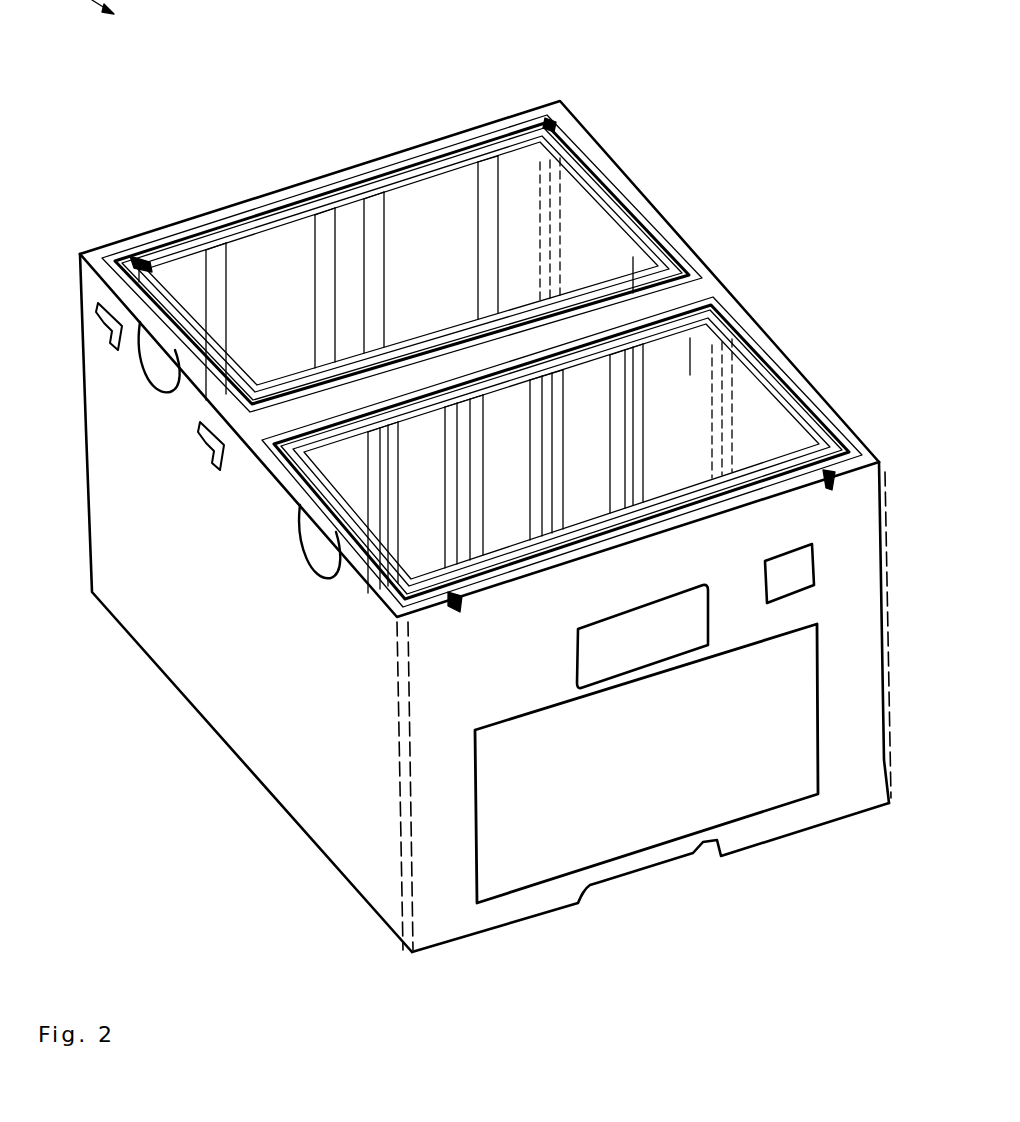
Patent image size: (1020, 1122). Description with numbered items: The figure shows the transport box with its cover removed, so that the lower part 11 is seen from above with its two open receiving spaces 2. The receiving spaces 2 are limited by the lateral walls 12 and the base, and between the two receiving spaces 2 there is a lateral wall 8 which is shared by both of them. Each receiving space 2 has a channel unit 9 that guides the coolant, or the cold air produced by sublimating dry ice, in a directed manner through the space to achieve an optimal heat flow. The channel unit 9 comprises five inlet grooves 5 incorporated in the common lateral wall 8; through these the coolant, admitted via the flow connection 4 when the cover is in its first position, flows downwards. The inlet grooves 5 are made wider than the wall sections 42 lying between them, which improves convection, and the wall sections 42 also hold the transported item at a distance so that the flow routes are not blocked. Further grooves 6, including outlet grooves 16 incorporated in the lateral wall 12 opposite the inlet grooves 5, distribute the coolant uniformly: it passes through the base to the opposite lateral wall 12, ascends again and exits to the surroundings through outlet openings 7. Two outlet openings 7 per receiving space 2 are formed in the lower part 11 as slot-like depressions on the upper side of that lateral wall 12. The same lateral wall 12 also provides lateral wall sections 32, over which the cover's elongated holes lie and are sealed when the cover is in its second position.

The receiving space 2 is at (438, 225).
The flow connection 4 is at (630, 383).
The inlet groove 5 is at (677, 410).
The further groove 6 is at (587, 327).
The outlet opening 7 is at (140, 255).
The lateral wall 8 is at (645, 280).
The channel unit 9 is at (310, 160).
The lower part 11 is at (378, 925).
The lateral wall 12 is at (243, 633).
The outlet groove 16 is at (487, 230).
The lateral wall section 32 is at (447, 183).
The wall section 42 is at (672, 358).